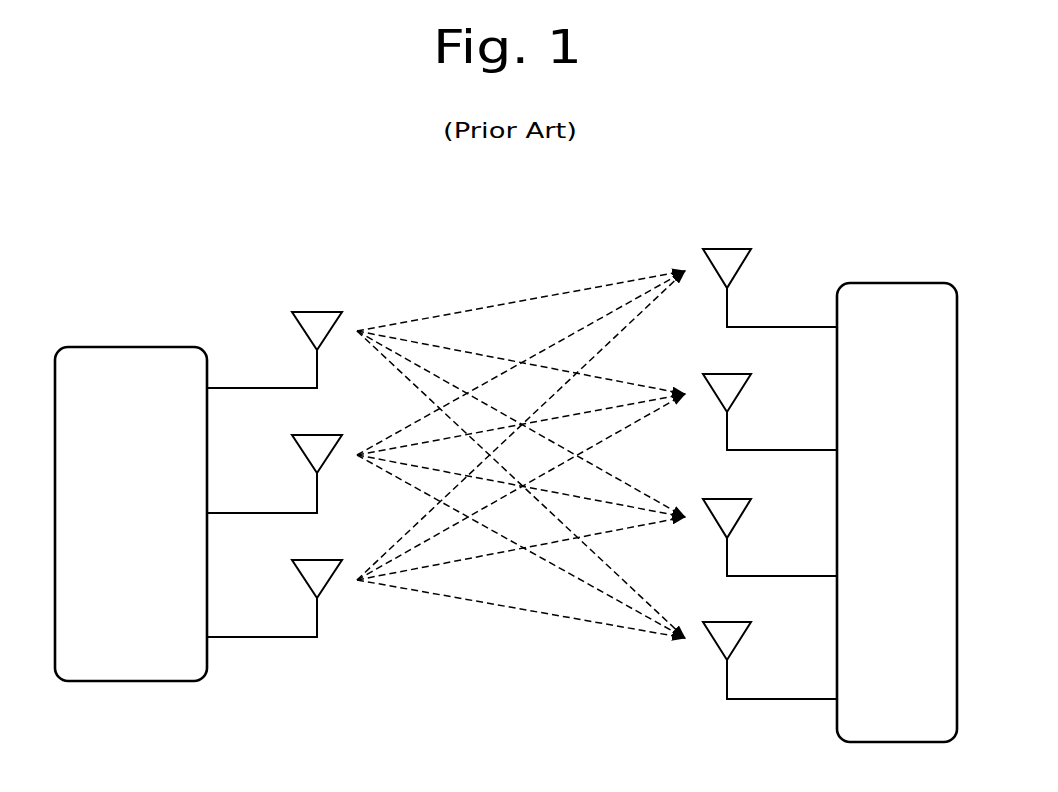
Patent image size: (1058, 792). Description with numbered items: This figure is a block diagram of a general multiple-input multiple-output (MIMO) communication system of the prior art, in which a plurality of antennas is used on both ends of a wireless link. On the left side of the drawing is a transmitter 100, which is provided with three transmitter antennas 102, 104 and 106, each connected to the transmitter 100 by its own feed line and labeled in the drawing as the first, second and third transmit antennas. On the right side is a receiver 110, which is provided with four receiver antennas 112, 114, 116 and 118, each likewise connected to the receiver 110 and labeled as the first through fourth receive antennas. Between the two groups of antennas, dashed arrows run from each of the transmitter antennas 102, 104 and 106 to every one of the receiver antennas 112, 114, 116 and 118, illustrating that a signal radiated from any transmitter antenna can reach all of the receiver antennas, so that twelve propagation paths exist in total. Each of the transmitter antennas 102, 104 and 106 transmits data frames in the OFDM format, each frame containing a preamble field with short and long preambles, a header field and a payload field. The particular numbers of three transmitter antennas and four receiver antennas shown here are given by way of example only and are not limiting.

The transmitter 100 is at (147, 347).
The transmitter antenna 102 is at (303, 334).
The transmitter antenna 104 is at (303, 456).
The transmitter antenna 106 is at (303, 581).
The receiver 110 is at (897, 283).
The receiver antenna 112 is at (740, 272).
The receiver antenna 114 is at (740, 396).
The receiver antenna 116 is at (740, 519).
The receiver antenna 118 is at (740, 644).